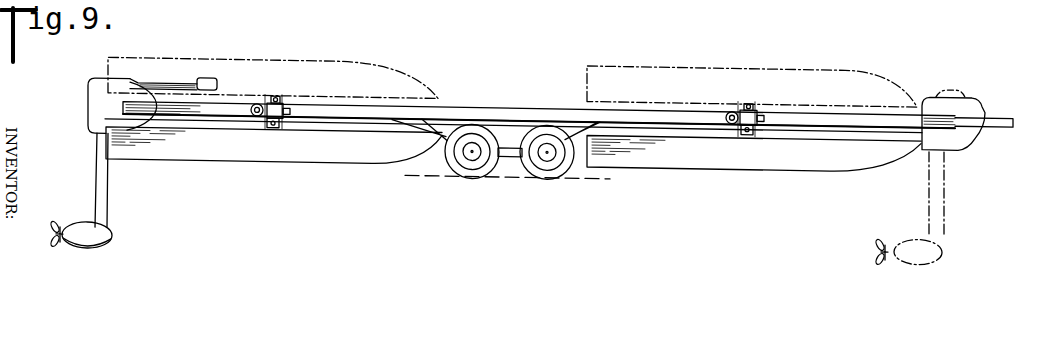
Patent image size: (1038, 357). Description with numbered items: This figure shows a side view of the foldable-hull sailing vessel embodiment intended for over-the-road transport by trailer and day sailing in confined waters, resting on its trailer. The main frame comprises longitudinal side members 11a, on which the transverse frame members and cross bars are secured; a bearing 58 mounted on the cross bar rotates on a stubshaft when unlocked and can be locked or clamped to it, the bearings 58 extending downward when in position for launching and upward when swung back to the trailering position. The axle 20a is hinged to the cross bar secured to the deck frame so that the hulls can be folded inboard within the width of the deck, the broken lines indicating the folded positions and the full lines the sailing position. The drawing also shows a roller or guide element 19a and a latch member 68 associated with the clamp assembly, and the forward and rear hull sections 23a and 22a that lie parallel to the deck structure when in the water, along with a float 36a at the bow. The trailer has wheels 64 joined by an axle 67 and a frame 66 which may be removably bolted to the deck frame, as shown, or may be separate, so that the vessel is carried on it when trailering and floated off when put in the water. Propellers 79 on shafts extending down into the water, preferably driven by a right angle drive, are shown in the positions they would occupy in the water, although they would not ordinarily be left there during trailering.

The longitudinal side member 11a is at (522, 98).
The roller guide 19a is at (253, 99).
The bearing 58 is at (285, 99).
The axle 20a is at (276, 123).
The latch member 68 is at (764, 109).
The rear hull section 22a is at (689, 146).
The front hull section 23a is at (222, 153).
The wheel 64 is at (472, 170).
The axle 67 is at (511, 153).
The frame 66 is at (1005, 104).
The float pontoon 36a is at (108, 222).
The propeller 79 is at (52, 228).